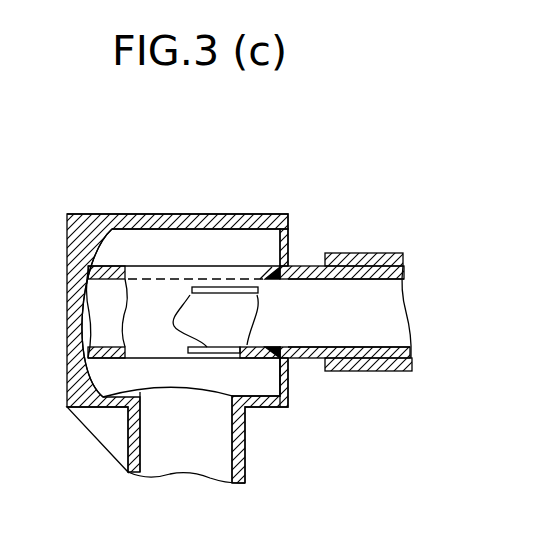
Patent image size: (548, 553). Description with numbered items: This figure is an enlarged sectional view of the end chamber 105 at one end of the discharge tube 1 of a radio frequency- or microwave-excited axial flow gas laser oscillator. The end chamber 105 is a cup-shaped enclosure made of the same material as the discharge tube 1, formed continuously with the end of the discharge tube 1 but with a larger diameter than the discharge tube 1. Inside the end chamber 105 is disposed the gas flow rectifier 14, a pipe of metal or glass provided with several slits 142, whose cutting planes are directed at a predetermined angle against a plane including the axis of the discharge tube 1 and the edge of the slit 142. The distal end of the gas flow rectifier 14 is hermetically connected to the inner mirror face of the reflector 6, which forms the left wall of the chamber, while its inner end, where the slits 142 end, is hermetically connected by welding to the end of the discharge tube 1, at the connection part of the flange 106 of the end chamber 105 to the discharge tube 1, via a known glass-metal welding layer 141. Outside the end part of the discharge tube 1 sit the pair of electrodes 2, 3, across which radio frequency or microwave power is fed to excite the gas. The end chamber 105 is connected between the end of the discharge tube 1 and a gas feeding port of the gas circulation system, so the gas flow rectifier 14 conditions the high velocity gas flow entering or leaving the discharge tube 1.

The discharge tube 1 is at (302, 268).
The electrode 2 is at (343, 253).
The electrode 3 is at (377, 371).
The reflector 6 is at (70, 285).
The gas flow rectifier 14 is at (149, 272).
The end chamber 105 is at (203, 220).
The flange 106 is at (290, 387).
The glass-metal welding layer 141 is at (278, 352).
The slit 142 is at (207, 347).